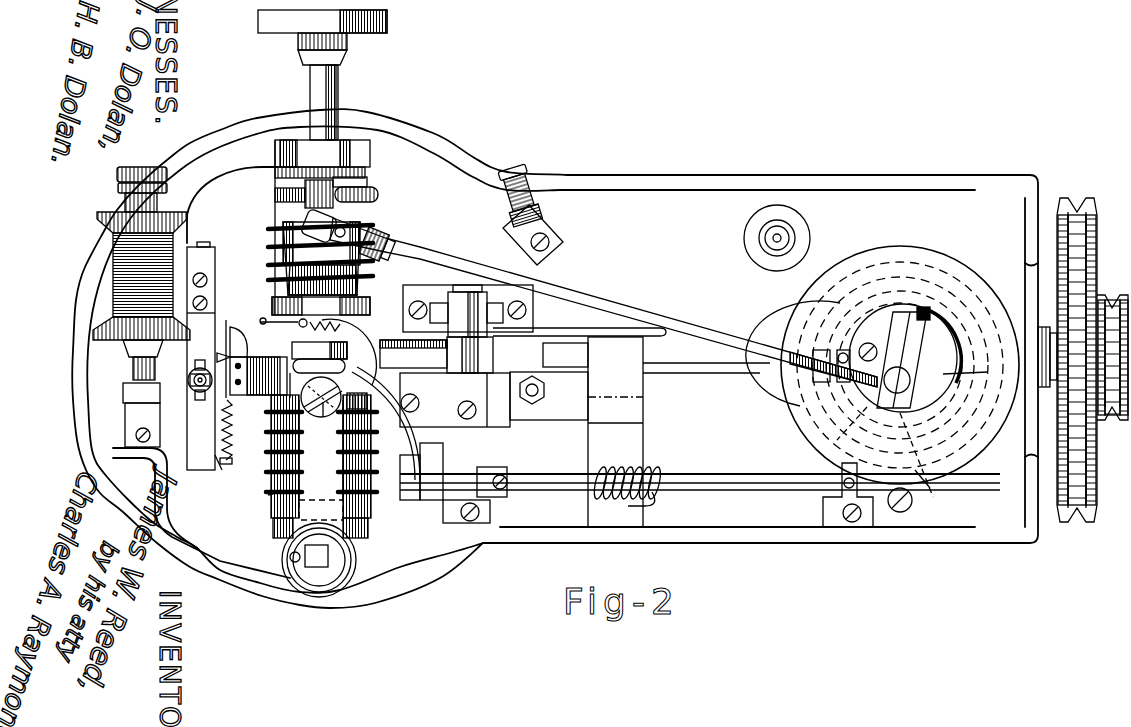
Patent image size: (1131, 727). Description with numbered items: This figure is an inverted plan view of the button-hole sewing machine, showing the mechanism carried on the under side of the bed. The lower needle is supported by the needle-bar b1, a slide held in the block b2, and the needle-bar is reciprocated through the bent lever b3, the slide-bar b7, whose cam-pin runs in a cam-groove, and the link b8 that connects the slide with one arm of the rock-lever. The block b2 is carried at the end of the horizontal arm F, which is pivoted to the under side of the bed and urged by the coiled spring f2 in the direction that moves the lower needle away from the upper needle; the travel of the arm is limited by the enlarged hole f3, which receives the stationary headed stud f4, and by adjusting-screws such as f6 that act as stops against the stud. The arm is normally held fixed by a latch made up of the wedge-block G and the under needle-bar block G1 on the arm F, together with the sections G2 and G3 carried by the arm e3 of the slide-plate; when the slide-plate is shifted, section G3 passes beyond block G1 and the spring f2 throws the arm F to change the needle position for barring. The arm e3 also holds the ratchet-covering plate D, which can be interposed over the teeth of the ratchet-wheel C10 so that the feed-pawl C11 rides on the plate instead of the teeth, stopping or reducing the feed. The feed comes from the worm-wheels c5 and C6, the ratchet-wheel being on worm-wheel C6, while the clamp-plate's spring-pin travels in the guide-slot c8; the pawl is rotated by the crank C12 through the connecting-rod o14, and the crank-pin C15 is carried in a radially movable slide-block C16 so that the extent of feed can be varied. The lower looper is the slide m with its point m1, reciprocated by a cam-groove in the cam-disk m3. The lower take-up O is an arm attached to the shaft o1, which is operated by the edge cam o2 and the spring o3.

The ratchet-covering plate D is at (335, 152).
The pawl C11 is at (300, 195).
The ratchet-wheel C10 is at (282, 198).
The worm-wheel C6 is at (296, 252).
The latch section G2 is at (217, 353).
The wedge-block G is at (232, 357).
The under needle-bar block G1 is at (230, 395).
The latch section G3 is at (220, 458).
The adjusting-screw f6 is at (234, 452).
The worm-wheel c5 is at (272, 494).
The arm e3 is at (196, 356).
The needle-bar b1 is at (312, 359).
The block b2 is at (293, 385).
The lower take-up O is at (341, 390).
The slot or enlarged hole f3 is at (366, 392).
The stationary headed stud f4 is at (328, 407).
The horizontal arm F is at (321, 466).
The spring f2 is at (313, 590).
The connecting-rod o14 is at (645, 314).
The bent lever b3 is at (436, 352).
The link b8 is at (547, 335).
The slide-bar b7 is at (730, 372).
The slide m is at (500, 400).
The point m1 is at (567, 400).
The shaft o1 is at (675, 474).
The spring o3 is at (656, 498).
The edge cam o2 is at (837, 457).
The cam-disk m3 is at (980, 278).
The slide-block C16 is at (887, 358).
The guide-slot c8 is at (973, 370).
The crank-pin C15 is at (840, 452).
The crank C12 is at (934, 489).